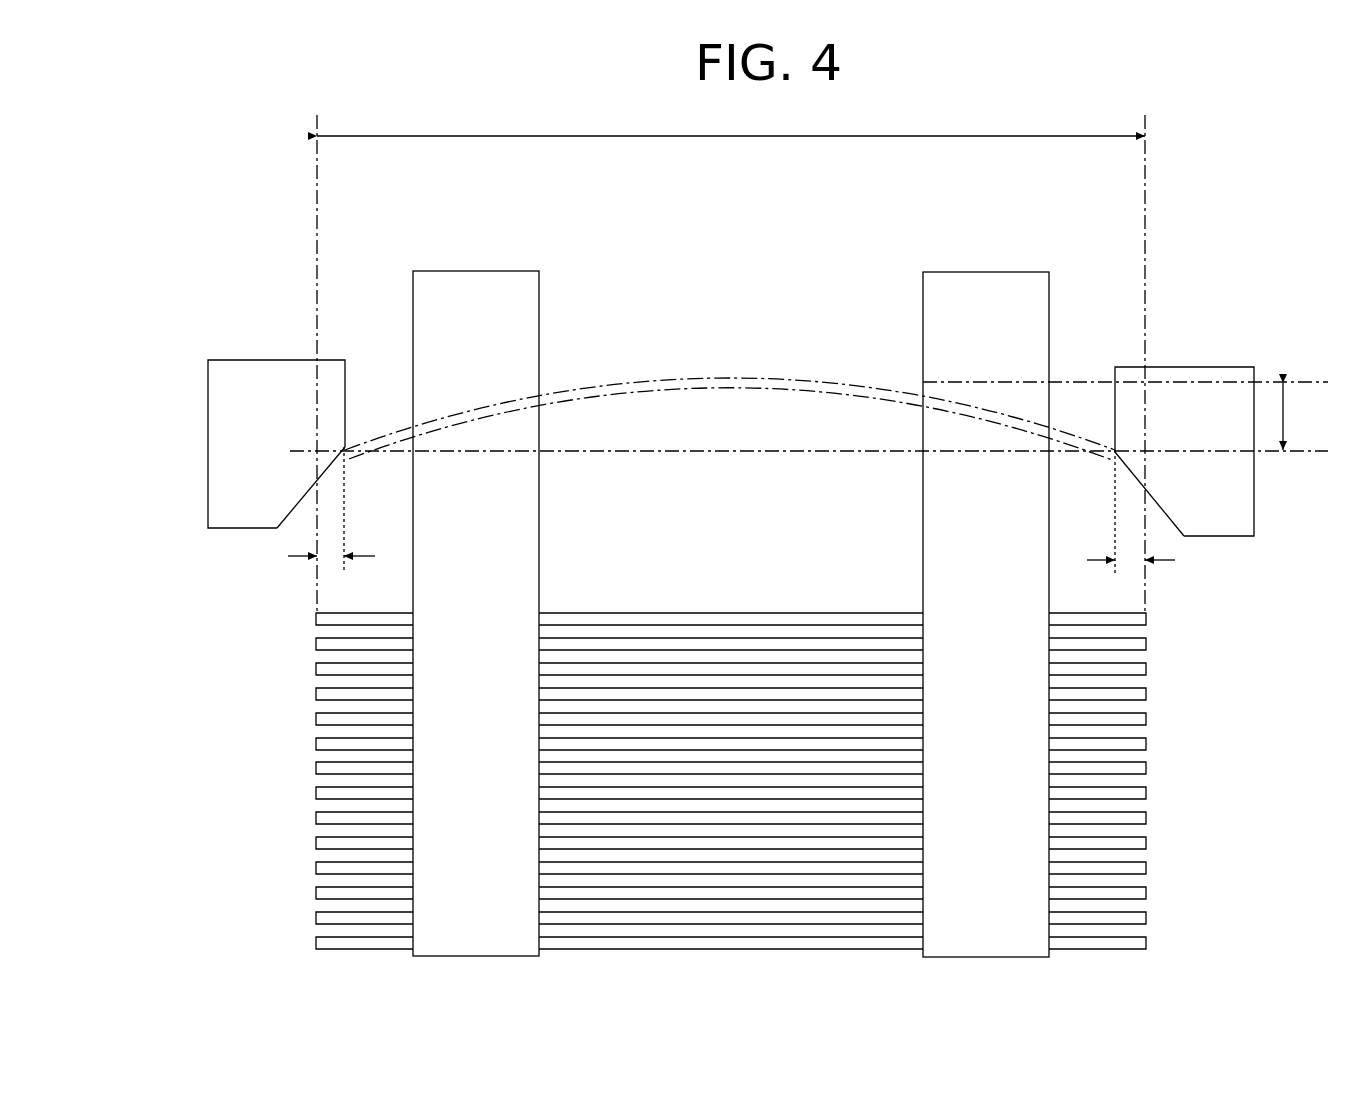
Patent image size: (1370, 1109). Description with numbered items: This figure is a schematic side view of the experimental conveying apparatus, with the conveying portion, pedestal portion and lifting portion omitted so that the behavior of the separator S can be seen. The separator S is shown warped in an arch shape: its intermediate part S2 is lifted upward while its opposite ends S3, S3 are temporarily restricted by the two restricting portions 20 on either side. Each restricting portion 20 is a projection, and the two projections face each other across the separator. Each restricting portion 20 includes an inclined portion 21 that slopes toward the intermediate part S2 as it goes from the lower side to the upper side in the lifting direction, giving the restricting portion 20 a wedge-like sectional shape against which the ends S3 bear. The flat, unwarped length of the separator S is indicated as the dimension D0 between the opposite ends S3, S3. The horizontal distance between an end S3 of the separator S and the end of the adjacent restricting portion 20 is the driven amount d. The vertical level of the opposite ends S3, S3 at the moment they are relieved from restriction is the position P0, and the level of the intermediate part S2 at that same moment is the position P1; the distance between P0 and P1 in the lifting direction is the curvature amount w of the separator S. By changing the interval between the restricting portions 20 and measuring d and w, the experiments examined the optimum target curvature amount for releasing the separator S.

The restricting portion 20 is at (257, 357).
The inclined portion 21 is at (296, 508).
The separator S is at (707, 610).
The intermediate part S2 is at (790, 612).
The opposite end S3 is at (314, 620).
The position of the opposite ends P0 is at (830, 457).
The position of the intermediate part P1 is at (1146, 385).
The curvature amount w is at (1297, 416).
The dimension between the opposite ends D0 is at (731, 120).
The driven amount d is at (732, 543).